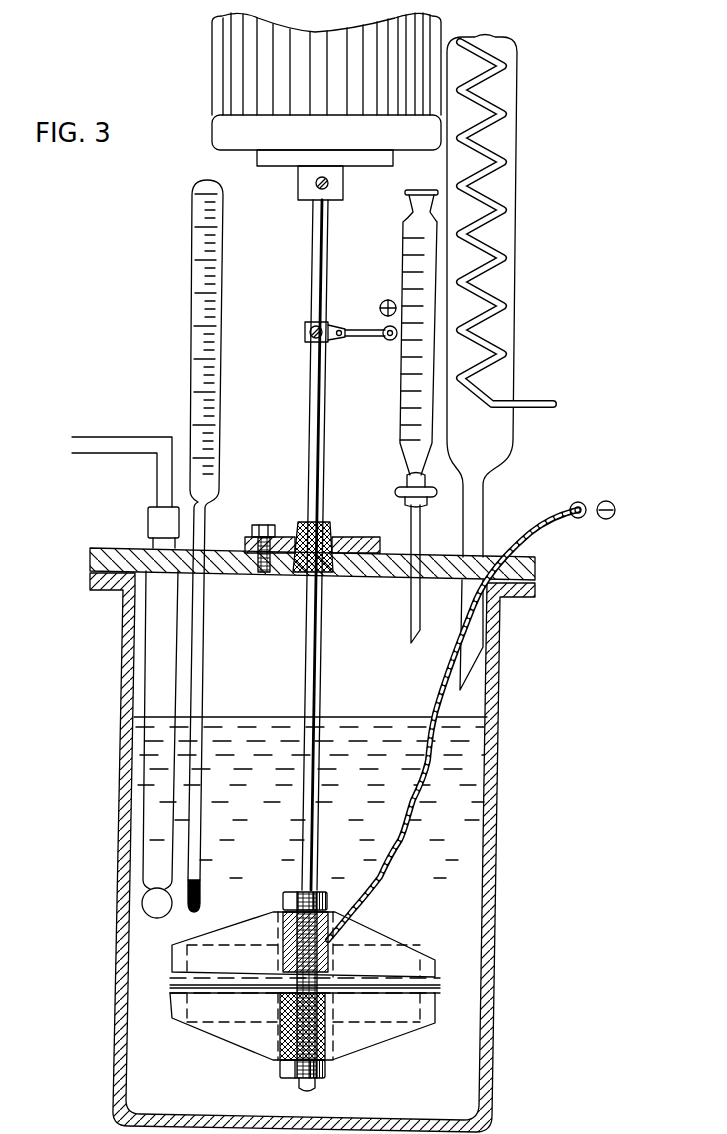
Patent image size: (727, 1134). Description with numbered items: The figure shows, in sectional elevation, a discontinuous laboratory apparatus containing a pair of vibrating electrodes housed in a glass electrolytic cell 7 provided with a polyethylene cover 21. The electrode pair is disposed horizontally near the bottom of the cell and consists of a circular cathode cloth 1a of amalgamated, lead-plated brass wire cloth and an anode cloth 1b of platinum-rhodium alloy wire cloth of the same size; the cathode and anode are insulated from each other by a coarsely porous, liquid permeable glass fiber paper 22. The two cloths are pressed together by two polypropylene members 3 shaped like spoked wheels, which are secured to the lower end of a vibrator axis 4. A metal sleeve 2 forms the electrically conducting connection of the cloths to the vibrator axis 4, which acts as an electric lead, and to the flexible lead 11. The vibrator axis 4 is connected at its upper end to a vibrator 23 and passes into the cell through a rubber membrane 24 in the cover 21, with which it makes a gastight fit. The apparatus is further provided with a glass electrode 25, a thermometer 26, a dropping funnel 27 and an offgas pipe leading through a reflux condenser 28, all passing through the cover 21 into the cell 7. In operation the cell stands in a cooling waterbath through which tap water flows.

The cathode cloth 1a is at (440, 979).
The anode cloth 1b is at (440, 993).
The metal sleeve 2 is at (282, 1032).
The polypropylene members 3 is at (368, 932).
The vibrator axis 4 is at (306, 628).
The electrolytic cell 7 is at (498, 876).
The flexible lead 11 is at (412, 823).
The cover 21 is at (540, 568).
The liquid permeable insulator 22 is at (440, 987).
The vibrator 23 is at (215, 62).
The rubber membrane 24 is at (292, 575).
The glass electrode 25 is at (150, 520).
The thermometer 26 is at (192, 238).
The dropping funnel 27 is at (405, 243).
The reflux condenser 28 is at (500, 162).